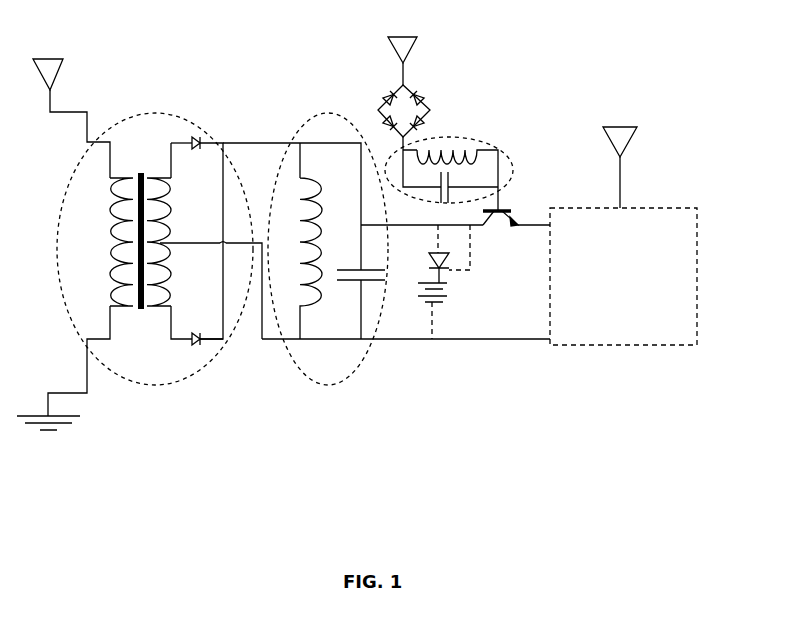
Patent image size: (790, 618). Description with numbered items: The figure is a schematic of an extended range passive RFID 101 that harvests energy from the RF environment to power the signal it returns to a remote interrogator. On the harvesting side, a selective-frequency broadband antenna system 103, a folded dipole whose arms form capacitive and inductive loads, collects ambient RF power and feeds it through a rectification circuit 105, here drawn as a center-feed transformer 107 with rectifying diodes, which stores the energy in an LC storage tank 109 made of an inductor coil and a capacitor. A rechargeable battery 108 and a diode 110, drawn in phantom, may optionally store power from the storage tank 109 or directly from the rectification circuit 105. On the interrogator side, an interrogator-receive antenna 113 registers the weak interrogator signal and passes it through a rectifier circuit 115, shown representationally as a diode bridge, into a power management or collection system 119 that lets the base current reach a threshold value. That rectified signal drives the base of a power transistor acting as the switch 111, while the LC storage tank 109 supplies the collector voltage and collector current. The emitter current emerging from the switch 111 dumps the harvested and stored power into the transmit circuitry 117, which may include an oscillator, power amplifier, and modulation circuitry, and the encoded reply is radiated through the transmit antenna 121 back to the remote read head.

The extended range passive RFID 101 is at (414, 430).
The selective-frequency broadband antenna system 103 is at (58, 72).
The rectification circuit 105 is at (215, 362).
The center-feed transformer 107 is at (110, 242).
The rechargeable battery 108 is at (447, 297).
The LC storage tank 109 is at (367, 360).
The diode 110 is at (432, 256).
The switch 111 is at (512, 209).
The interrogator-receive antenna 113 is at (415, 45).
The rectifier circuit 115 is at (428, 107).
The transmit circuitry 117 is at (697, 302).
The power management or collection system 119 is at (475, 137).
The transmit antenna 121 is at (637, 128).